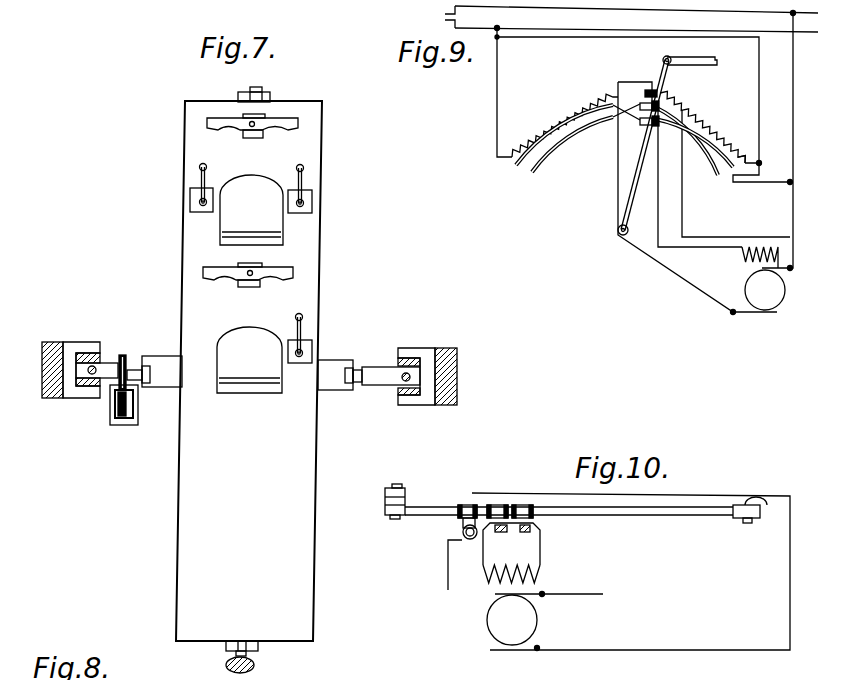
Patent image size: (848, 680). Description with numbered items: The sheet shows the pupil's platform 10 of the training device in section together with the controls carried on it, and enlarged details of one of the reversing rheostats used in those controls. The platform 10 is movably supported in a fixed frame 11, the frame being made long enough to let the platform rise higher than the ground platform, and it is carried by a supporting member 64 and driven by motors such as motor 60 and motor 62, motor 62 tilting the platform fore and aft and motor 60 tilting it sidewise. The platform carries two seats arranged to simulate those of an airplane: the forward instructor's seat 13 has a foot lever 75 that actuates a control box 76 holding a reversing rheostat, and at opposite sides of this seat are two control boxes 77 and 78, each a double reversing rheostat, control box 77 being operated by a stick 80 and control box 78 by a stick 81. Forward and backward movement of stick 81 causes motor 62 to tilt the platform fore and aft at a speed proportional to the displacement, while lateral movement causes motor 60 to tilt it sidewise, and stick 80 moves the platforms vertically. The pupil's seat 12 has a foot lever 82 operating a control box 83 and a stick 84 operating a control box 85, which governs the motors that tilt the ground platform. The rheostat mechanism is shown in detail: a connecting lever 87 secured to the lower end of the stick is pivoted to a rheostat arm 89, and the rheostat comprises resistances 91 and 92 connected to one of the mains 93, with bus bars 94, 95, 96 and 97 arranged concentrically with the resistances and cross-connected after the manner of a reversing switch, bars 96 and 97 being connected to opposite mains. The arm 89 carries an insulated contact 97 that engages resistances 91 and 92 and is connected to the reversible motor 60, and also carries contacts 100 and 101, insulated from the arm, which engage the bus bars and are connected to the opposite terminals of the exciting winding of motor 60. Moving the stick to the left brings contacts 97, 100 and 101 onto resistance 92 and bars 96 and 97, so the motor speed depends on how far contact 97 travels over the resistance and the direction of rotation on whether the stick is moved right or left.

In FIG. 7, the pupil's platform 10 is at (249, 371).
In FIG. 7, the fixed frame 11 is at (50, 395).
In FIG. 7, the pupil's seat 12 is at (249, 360).
In FIG. 7, the instructor's seat 13 is at (251, 210).
In FIG. 9, the motor 60 is at (770, 296).
In FIG. 10, the motor 60 is at (495, 620).
In FIG. 7, the motor 62 is at (118, 406).
In FIG. 7, the supporting member 64 is at (266, 96).
In FIG. 7, the foot lever 75 is at (295, 124).
In FIG. 7, the control box 76 is at (258, 138).
In FIG. 7, the control box 77 is at (190, 196).
In FIG. 7, the control box 78 is at (305, 206).
In FIG. 7, the stick 80 is at (200, 172).
In FIG. 7, the stick 81 is at (303, 178).
In FIG. 7, the foot lever 82 is at (290, 273).
In FIG. 7, the control box 83 is at (244, 284).
In FIG. 7, the stick 84 is at (302, 314).
In FIG. 7, the control box 85 is at (306, 350).
In FIG. 9, the connecting lever 87 is at (714, 58).
In FIG. 10, the connecting lever 87 is at (386, 492).
In FIG. 9, the rheostat arm 89 is at (632, 172).
In FIG. 10, the rheostat arm 89 is at (430, 508).
In FIG. 9, the resistance 91 is at (570, 108).
In FIG. 9, the resistance 92 is at (703, 118).
In FIG. 9, the mains 93 is at (615, 17).
In FIG. 9, the bus bar 94 is at (516, 165).
In FIG. 9, the bus bar 95 is at (532, 172).
In FIG. 9, the bus bar 96 is at (728, 143).
In FIG. 10, the bus bar 96 is at (500, 532).
In FIG. 9, the contact 97 is at (660, 95).
In FIG. 10, the contact 97 is at (468, 504).
In FIG. 10, the contact 100 is at (498, 504).
In FIG. 10, the contact 101 is at (522, 504).